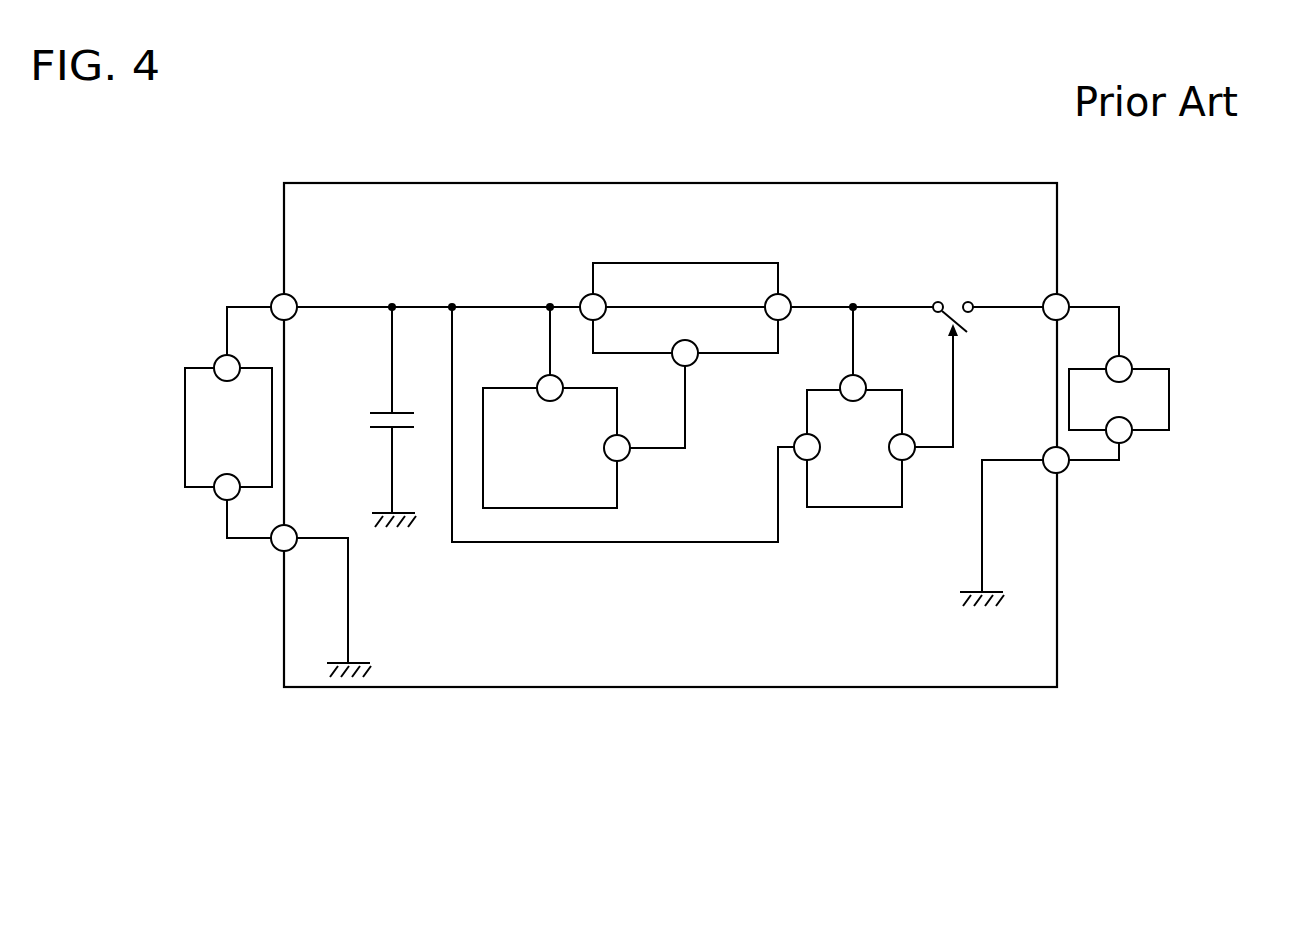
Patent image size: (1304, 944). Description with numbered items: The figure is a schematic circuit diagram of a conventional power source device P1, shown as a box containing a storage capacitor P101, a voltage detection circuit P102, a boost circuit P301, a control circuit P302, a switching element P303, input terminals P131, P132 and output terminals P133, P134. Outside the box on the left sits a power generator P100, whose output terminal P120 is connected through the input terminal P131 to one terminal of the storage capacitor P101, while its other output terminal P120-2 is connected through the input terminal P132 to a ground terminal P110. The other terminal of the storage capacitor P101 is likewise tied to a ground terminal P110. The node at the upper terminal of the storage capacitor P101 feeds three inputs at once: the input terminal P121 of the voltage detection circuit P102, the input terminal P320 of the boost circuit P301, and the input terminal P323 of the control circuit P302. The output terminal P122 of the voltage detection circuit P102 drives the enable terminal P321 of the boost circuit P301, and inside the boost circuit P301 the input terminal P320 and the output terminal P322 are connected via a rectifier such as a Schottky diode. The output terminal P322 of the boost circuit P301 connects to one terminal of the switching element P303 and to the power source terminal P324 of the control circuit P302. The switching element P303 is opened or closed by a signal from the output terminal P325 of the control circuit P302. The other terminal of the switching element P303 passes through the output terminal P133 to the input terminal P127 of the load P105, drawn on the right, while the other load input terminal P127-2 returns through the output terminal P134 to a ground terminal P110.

The conventional power source device P1 is at (585, 183).
The power generator P100 is at (185, 421).
The storage capacitor P101 is at (378, 413).
The voltage detection circuit P102 is at (617, 485).
The load P105 is at (1169, 397).
The ground terminal P110 is at (362, 663).
The output terminal of the power generator P120 is at (216, 360).
The output terminal of the power generator P120-2 is at (223, 500).
The input terminal of the voltage detection circuit P121 is at (540, 382).
The output terminal of the voltage detection circuit P122 is at (627, 440).
The input terminal of the load P127 is at (1130, 360).
The input terminal of the load P127-2 is at (1125, 442).
The input terminal P131 is at (276, 296).
The input terminal P132 is at (276, 550).
The output terminal P133 is at (1065, 298).
The output terminal P134 is at (1062, 472).
The boost circuit P301 is at (685, 263).
The control circuit P302 is at (850, 507).
The switching element P303 is at (950, 300).
The input terminal of the boost circuit P320 is at (582, 300).
The enable terminal of the boost circuit P321 is at (697, 360).
The output terminal of the boost circuit P322 is at (791, 305).
The input terminal of the control circuit P323 is at (805, 460).
The power source terminal of the control circuit P324 is at (890, 360).
The output terminal of the control circuit P325 is at (905, 460).